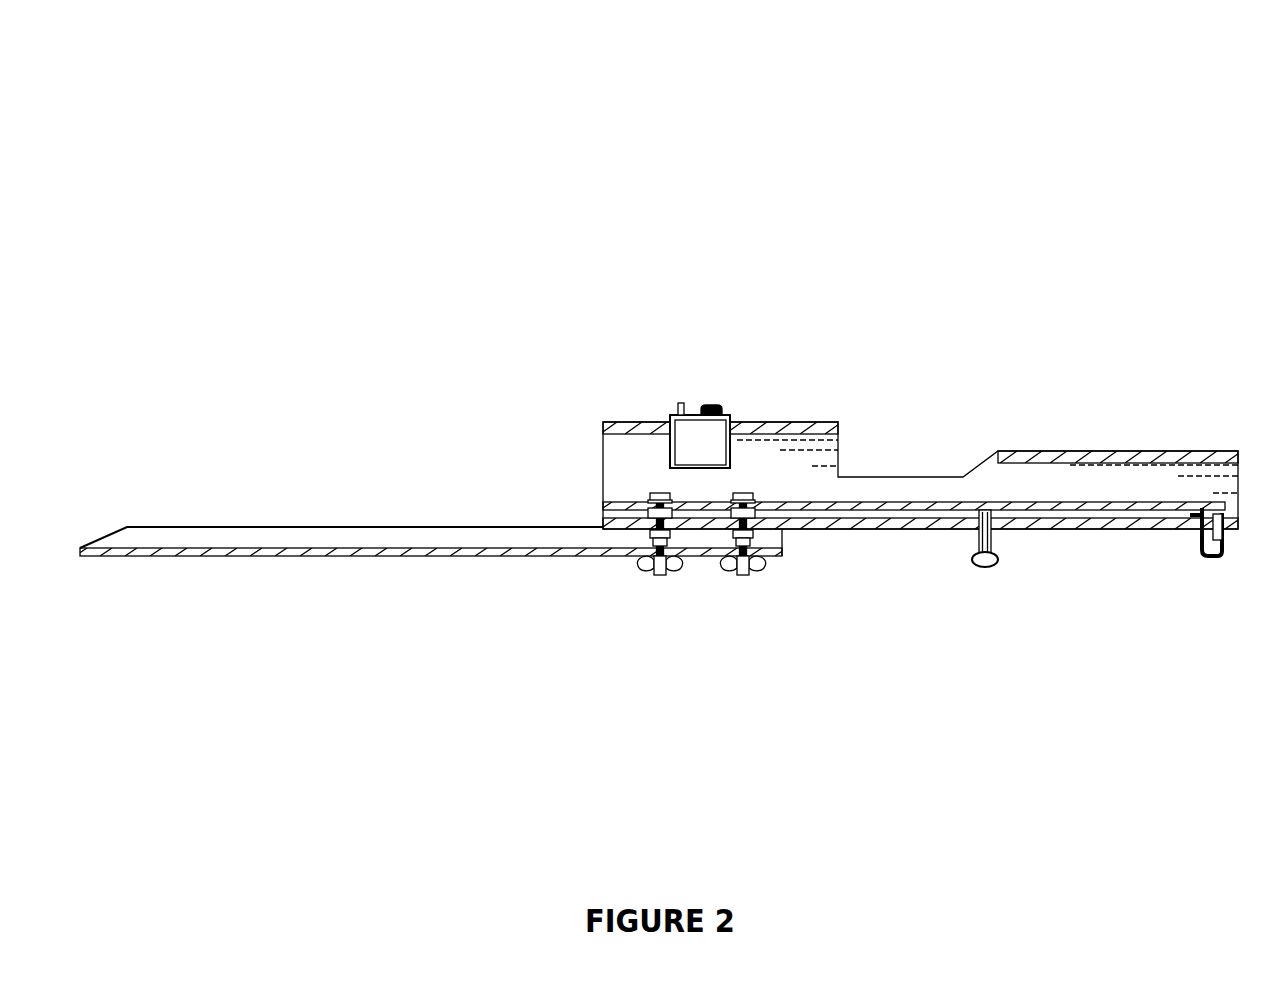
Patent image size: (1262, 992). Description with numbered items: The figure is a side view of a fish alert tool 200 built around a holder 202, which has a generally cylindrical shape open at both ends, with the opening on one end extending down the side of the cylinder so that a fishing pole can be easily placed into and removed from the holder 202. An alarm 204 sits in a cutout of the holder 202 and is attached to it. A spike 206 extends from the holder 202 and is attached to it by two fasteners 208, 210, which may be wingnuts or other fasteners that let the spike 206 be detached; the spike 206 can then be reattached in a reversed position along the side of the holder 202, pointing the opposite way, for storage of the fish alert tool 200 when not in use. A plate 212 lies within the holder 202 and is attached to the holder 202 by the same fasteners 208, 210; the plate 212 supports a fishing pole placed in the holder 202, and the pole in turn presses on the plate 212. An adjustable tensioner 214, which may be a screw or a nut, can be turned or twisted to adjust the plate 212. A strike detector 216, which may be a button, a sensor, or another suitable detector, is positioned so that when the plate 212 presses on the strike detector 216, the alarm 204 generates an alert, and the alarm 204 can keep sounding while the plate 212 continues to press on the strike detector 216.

The fish alert tool 200 is at (1139, 51).
The holder 202 is at (1010, 438).
The alarm 204 is at (708, 395).
The spike 206 is at (263, 562).
The fastener 208 is at (661, 588).
The fastener 210 is at (745, 588).
The plate 212 is at (910, 505).
The adjustable tensioner 214 is at (985, 567).
The strike detector 216 is at (1212, 565).